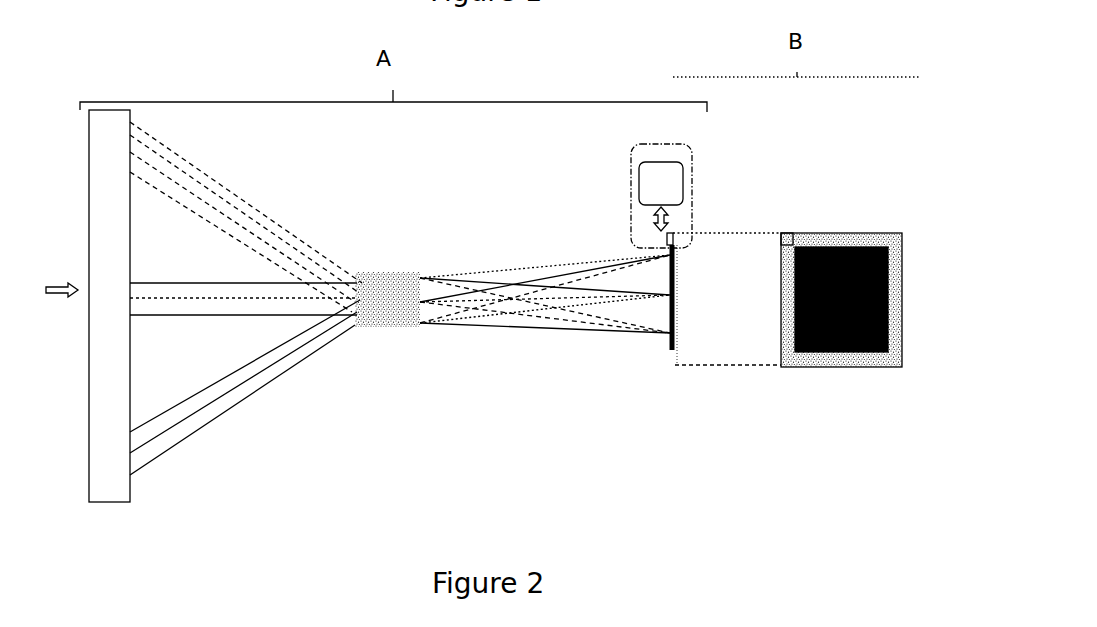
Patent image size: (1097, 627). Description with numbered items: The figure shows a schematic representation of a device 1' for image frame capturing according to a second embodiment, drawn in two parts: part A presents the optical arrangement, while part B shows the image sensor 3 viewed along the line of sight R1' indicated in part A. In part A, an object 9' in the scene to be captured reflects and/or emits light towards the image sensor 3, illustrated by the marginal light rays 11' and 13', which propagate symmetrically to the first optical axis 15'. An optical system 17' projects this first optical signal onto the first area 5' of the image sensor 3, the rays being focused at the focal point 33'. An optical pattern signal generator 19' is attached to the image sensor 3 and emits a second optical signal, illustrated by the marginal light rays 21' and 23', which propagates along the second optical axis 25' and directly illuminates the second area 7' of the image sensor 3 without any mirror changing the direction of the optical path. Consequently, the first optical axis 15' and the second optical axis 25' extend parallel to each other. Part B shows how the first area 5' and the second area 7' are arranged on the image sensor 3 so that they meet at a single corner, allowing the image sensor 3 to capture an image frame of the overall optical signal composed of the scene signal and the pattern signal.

The device 1' is at (393, 299).
The line of sight R1' is at (61, 277).
The object 9' is at (162, 306).
The light ray 11' is at (400, 318).
The light ray 13' is at (400, 279).
The optical axis 15' is at (400, 265).
The optical system 17' is at (378, 353).
The optical pattern signal generator 19' is at (708, 178).
The light ray 21' is at (599, 184).
The light ray 23' is at (613, 165).
The optical axis 25' is at (604, 197).
The area 7' is at (748, 211).
The area 5' is at (786, 339).
The focal point 33' is at (718, 296).
The image sensor 3 is at (778, 367).